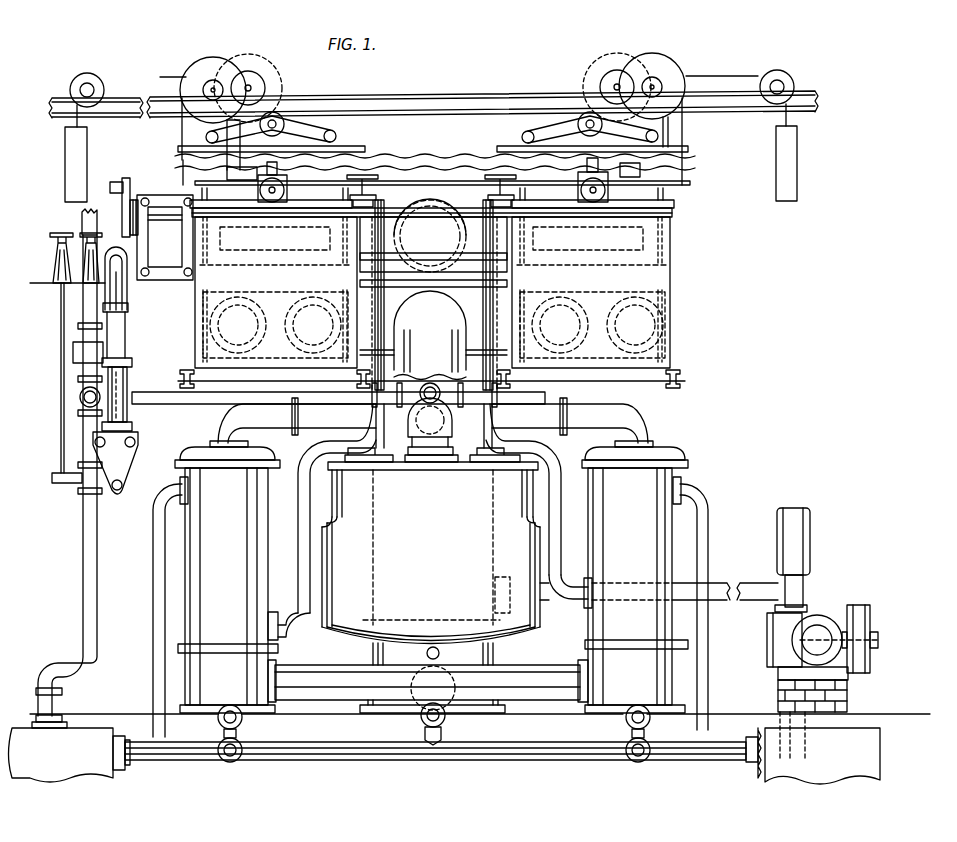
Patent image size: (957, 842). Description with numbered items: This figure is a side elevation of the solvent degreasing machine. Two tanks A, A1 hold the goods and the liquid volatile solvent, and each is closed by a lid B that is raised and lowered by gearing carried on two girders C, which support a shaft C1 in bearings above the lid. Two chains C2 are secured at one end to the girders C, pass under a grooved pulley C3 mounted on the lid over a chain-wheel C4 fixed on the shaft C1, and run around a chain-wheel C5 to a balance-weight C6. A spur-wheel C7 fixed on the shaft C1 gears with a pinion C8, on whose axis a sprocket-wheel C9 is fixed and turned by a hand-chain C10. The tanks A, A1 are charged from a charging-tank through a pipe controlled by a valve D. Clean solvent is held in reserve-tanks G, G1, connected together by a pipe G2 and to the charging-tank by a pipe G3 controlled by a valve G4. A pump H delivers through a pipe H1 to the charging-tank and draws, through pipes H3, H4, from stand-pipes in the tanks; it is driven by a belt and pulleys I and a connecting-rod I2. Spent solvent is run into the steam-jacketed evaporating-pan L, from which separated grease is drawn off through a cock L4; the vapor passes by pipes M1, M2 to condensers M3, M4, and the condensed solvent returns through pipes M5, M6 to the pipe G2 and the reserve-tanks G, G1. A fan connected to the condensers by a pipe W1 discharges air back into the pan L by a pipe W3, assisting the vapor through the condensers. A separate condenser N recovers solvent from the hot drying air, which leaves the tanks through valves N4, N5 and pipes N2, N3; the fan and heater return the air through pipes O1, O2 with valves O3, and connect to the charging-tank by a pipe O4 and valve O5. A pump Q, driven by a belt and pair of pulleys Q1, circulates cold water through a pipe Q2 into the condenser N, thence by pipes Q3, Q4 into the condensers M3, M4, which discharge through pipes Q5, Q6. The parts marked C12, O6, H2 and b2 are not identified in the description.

The girders C is at (121, 118).
The shaft C1 is at (258, 78).
The chains C2 is at (99, 78).
The grooved pulley C3 is at (290, 122).
The chain-wheel C4 is at (262, 92).
The chain-wheel C5 is at (78, 85).
The balance-weight C6 is at (435, 164).
The spur-wheel C7 is at (262, 58).
The pinion C8 is at (216, 84).
The sprocket-wheel C9 is at (195, 58).
The hand-chain C10 is at (684, 170).
The supply pipe C12 is at (309, 737).
The lid B is at (180, 147).
The pipe O1 is at (466, 276).
The pipe O2 is at (390, 276).
The valves O3 is at (376, 198).
The pipe O4 is at (586, 170).
The valve O5 is at (287, 193).
The cover O6 is at (275, 262).
The tank A is at (426, 288).
The tank A1 is at (431, 288).
The valve N4 is at (399, 325).
The valve N5 is at (474, 325).
The pipe N3 is at (622, 366).
The pipe N2 is at (373, 416).
The condenser N is at (370, 498).
The belt and pulleys I is at (151, 228).
The connecting-rod I2 is at (119, 297).
The pump H is at (130, 380).
The pipe H1 is at (92, 209).
The flange H2 is at (111, 275).
The pipe H3 is at (222, 393).
The pipe H4 is at (450, 428).
The valve D is at (495, 418).
The pipe W1 is at (428, 681).
The pipe W3 is at (412, 430).
The pipe M1 is at (293, 422).
The pipe M2 is at (572, 422).
The condenser M3 is at (227, 580).
The condenser M4 is at (635, 580).
The pipe M5 is at (242, 740).
The pipe M6 is at (626, 741).
The evaporating-pan L is at (431, 553).
The cock L4 is at (435, 696).
The pipe b2 is at (552, 614).
The pump Q is at (812, 548).
The belt and pair of pulleys Q1 is at (855, 605).
The pipe Q2 is at (745, 600).
The pipe Q3 is at (300, 493).
The pipe Q4 is at (572, 510).
The pipe Q5 is at (148, 514).
The pipe Q6 is at (701, 603).
The reserve-tank G is at (470, 748).
The reserve-tank G1 is at (813, 756).
The pipe G2 is at (435, 744).
The pipe G3 is at (96, 640).
The valve G4 is at (72, 484).